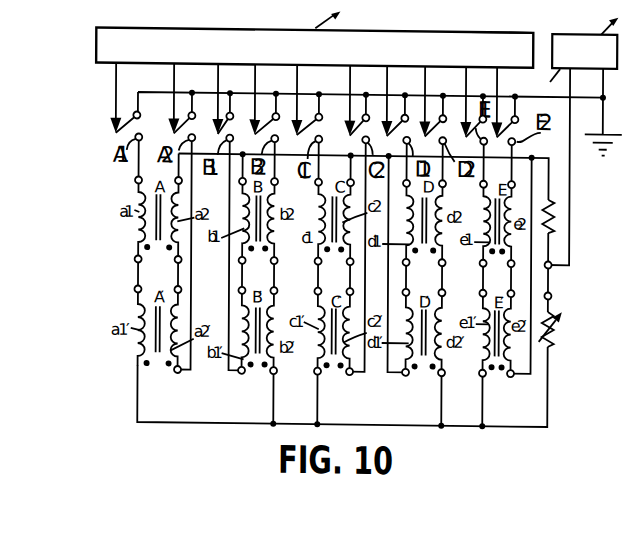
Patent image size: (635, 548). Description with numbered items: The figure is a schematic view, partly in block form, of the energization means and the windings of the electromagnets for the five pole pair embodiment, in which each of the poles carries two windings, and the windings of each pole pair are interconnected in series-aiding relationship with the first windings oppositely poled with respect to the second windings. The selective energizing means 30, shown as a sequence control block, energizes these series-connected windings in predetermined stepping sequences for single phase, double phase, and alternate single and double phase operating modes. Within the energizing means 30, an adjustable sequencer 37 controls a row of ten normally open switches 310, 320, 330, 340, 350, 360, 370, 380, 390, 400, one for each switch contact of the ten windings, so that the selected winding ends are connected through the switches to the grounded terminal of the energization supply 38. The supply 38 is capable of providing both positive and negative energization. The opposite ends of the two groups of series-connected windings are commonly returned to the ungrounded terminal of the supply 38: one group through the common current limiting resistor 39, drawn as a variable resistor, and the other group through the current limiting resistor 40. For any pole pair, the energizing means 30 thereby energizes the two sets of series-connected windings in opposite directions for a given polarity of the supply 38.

The selective energizing means 30 is at (379, 27).
The adjustable sequencer 37 is at (496, 23).
The energization supply 38 is at (578, 27).
The common current limiting resistor 39 is at (561, 323).
The current limiting resistor 40 is at (557, 203).
The switch 310 is at (116, 133).
The switch 320 is at (174, 133).
The switch 330 is at (218, 133).
The switch 340 is at (255, 133).
The switch 350 is at (297, 133).
The switch 360 is at (350, 133).
The switch 370 is at (387, 133).
The switch 380 is at (425, 133).
The switch 390 is at (466, 133).
The switch 400 is at (497, 133).